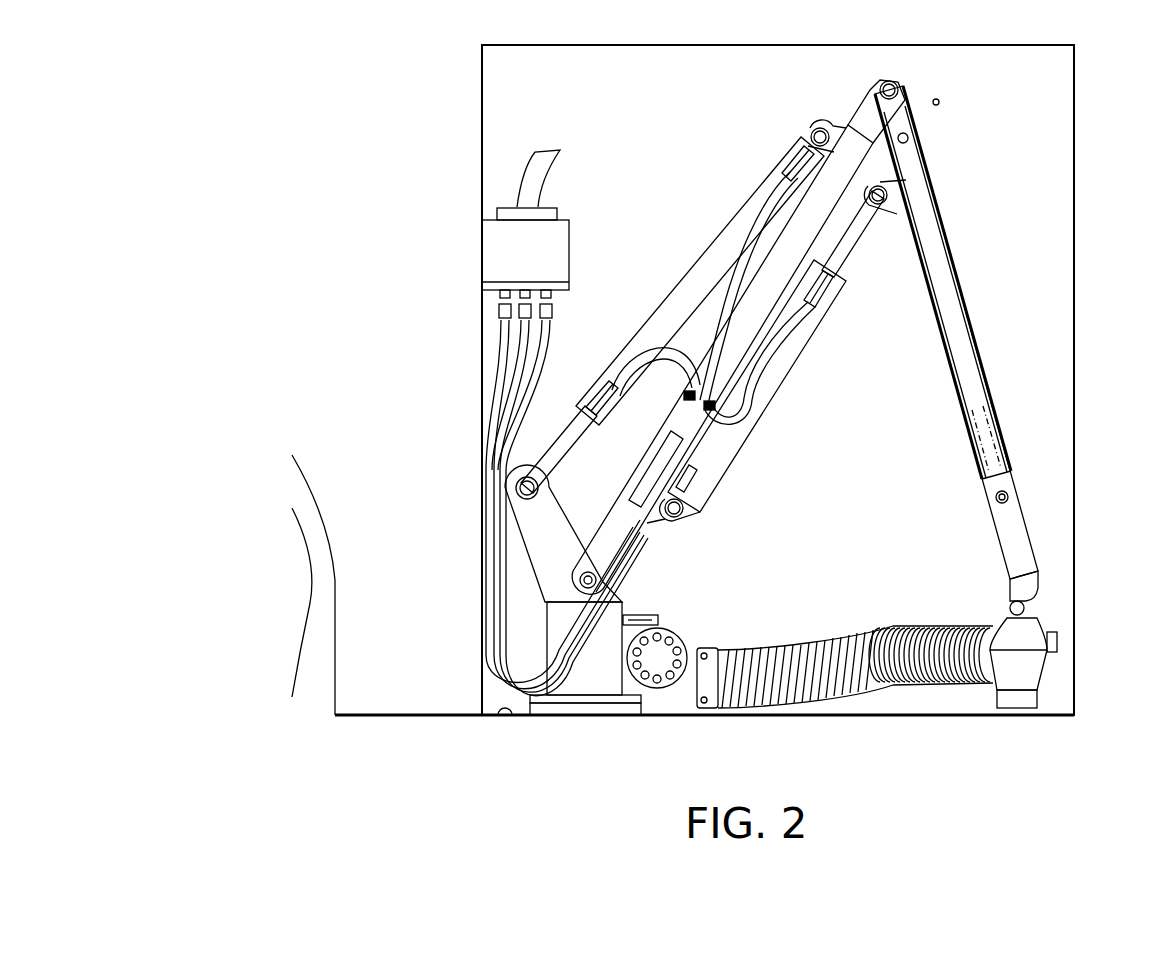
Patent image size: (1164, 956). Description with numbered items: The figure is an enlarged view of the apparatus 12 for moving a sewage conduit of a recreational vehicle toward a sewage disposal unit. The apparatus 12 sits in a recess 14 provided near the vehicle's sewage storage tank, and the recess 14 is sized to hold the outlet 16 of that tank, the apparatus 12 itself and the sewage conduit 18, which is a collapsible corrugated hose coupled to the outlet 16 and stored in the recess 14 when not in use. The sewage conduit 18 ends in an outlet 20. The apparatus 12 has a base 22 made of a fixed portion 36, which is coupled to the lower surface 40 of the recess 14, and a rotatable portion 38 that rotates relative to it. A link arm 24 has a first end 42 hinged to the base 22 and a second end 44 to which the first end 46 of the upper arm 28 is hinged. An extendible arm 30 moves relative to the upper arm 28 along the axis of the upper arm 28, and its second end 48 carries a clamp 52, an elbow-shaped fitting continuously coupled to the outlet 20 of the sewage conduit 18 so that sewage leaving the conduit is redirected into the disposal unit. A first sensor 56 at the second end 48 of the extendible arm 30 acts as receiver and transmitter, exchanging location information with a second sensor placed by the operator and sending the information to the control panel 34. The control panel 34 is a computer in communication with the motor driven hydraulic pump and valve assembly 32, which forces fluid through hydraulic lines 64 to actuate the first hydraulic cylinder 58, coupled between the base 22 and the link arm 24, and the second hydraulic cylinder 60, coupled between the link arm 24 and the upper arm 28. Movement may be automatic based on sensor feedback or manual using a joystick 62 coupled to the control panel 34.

The apparatus 12 is at (478, 727).
The recess 14 is at (1060, 280).
The outlet 16 is at (715, 712).
The sewage conduit 18 is at (852, 692).
The outlet 20 is at (1020, 712).
The base 22 is at (572, 688).
The link arm 24 is at (862, 125).
The upper arm 28 is at (905, 97).
The extendible arm 30 is at (1012, 522).
The motor driven hydraulic pump and valve assembly 32 is at (668, 690).
The control panel 34 is at (541, 262).
The fixed portion 36 is at (596, 712).
The rotatable portion 38 is at (569, 554).
The lower surface 40 is at (500, 718).
The first end 42 is at (622, 553).
The second end 44 is at (870, 100).
The first end 46 is at (905, 138).
The second end 48 is at (1038, 587).
The clamp 52 is at (1024, 612).
The first sensor 56 is at (1058, 641).
The first hydraulic cylinder 58 is at (700, 290).
The second hydraulic cylinder 60 is at (760, 380).
The joystick 62 is at (521, 185).
The hydraulic lines 64 is at (695, 462).